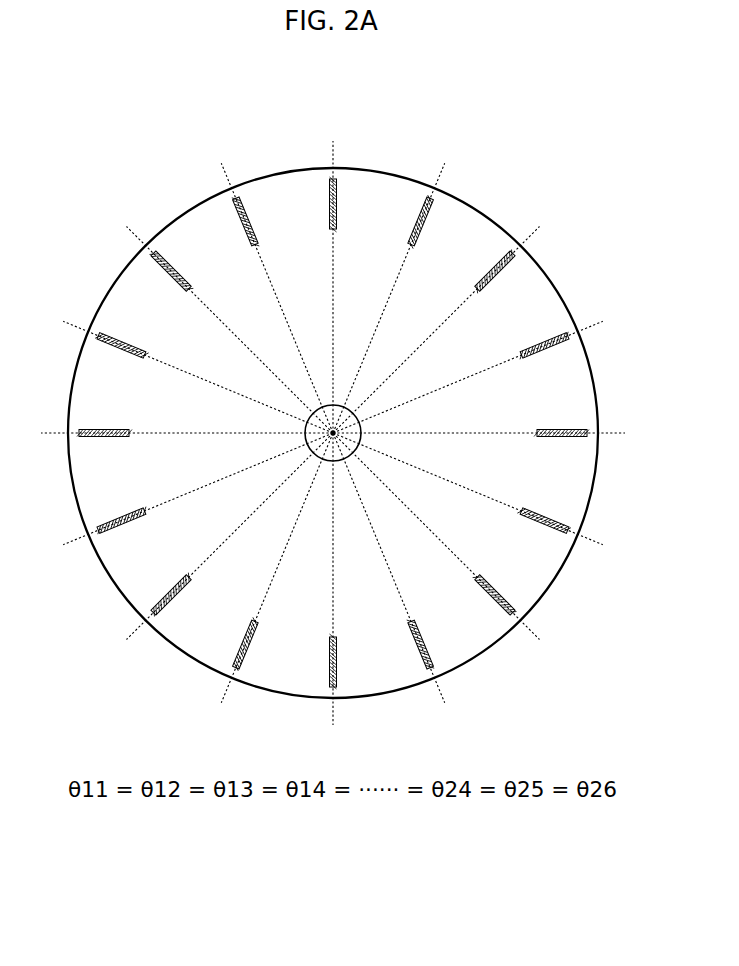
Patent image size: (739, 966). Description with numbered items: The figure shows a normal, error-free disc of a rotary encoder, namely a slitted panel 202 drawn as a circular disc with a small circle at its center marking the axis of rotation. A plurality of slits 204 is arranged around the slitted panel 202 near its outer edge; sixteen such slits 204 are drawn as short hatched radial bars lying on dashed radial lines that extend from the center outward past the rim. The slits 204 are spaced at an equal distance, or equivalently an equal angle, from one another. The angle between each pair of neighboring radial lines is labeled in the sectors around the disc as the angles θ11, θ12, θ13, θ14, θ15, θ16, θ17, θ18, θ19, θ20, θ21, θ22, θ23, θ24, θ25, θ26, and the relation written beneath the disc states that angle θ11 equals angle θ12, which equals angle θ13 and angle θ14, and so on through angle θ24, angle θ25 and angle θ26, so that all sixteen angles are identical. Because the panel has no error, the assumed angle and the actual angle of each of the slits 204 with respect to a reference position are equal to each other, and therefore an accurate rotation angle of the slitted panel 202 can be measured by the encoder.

The slitted panel 202 is at (505, 228).
The slits 204 is at (337, 190).
The angle θ 11 is at (372, 285).
The angle θ 12 is at (423, 298).
The angle θ 13 is at (467, 330).
The angle θ 14 is at (489, 377).
The angle θ 15 is at (489, 464).
The angle θ 16 is at (468, 519).
The angle θ 17 is at (436, 560).
The angle θ 18 is at (389, 579).
The angle θ 19 is at (293, 579).
The angle θ 20 is at (242, 568).
The angle θ 21 is at (198, 536).
The angle θ 22 is at (177, 489).
The angle θ 23 is at (177, 399).
The angle θ 24 is at (198, 346).
The angle θ 25 is at (230, 306).
The angle θ 26 is at (277, 285).